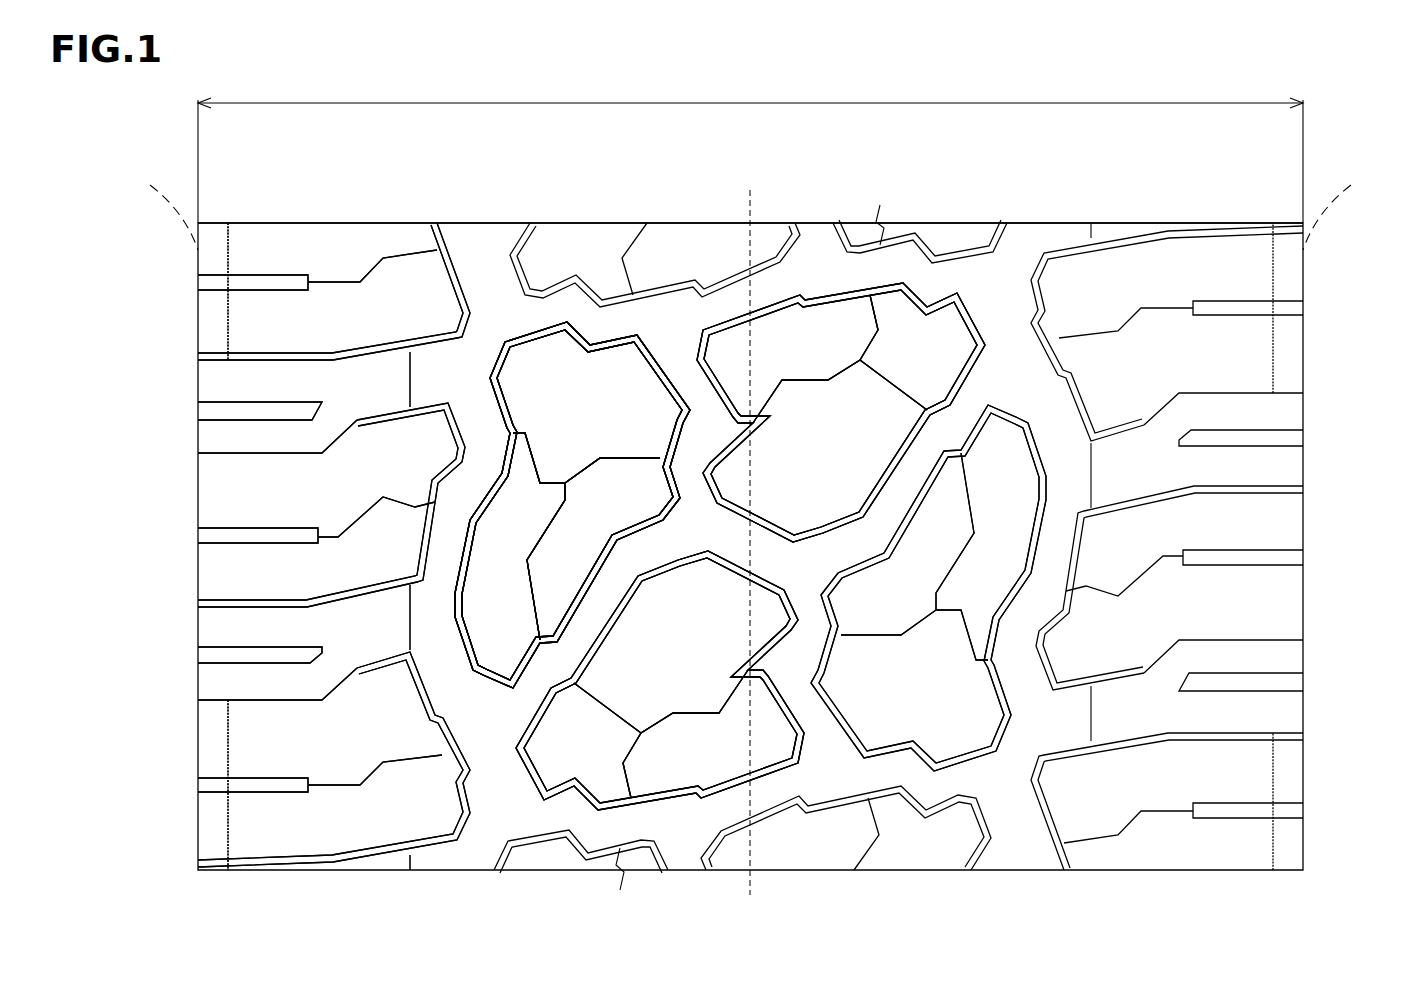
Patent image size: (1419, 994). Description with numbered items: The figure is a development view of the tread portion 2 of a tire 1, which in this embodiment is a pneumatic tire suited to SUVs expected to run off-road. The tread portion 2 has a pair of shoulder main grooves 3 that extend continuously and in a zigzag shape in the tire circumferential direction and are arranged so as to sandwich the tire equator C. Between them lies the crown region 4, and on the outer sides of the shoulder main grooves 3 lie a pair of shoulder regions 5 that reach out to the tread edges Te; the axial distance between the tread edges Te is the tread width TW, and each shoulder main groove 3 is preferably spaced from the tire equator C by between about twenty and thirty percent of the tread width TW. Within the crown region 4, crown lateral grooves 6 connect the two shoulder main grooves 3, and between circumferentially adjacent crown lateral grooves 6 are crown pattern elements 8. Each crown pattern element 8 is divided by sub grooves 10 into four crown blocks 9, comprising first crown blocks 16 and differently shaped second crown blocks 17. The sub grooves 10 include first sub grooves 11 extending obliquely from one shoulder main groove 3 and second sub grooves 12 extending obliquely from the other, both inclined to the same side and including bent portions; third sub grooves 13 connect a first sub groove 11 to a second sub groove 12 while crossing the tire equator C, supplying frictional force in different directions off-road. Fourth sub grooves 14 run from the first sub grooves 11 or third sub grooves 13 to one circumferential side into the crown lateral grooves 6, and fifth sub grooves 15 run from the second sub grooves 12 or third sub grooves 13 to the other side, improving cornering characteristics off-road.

The tire 1 is at (1095, 207).
The tread portion 2 is at (553, 215).
The shoulder main grooves 3 is at (490, 280).
The crown region 4 is at (683, 258).
The shoulder regions 5 is at (335, 250).
The crown lateral grooves 6 is at (900, 272).
The crown pattern elements 8 is at (540, 390).
The crown blocks 9 is at (128, 545).
The sub grooves 10 is at (740, 535).
The first sub grooves 11 is at (532, 690).
The second sub grooves 12 is at (945, 425).
The third sub grooves 13 is at (765, 545).
The fourth sub grooves 14 is at (705, 425).
The fifth sub grooves 15 is at (810, 630).
The first crown blocks 16 is at (515, 530).
The second crown blocks 17 is at (630, 665).
The tread width TW is at (750, 146).
The tread edges Te is at (752, 203).
The tire equator C is at (749, 529).